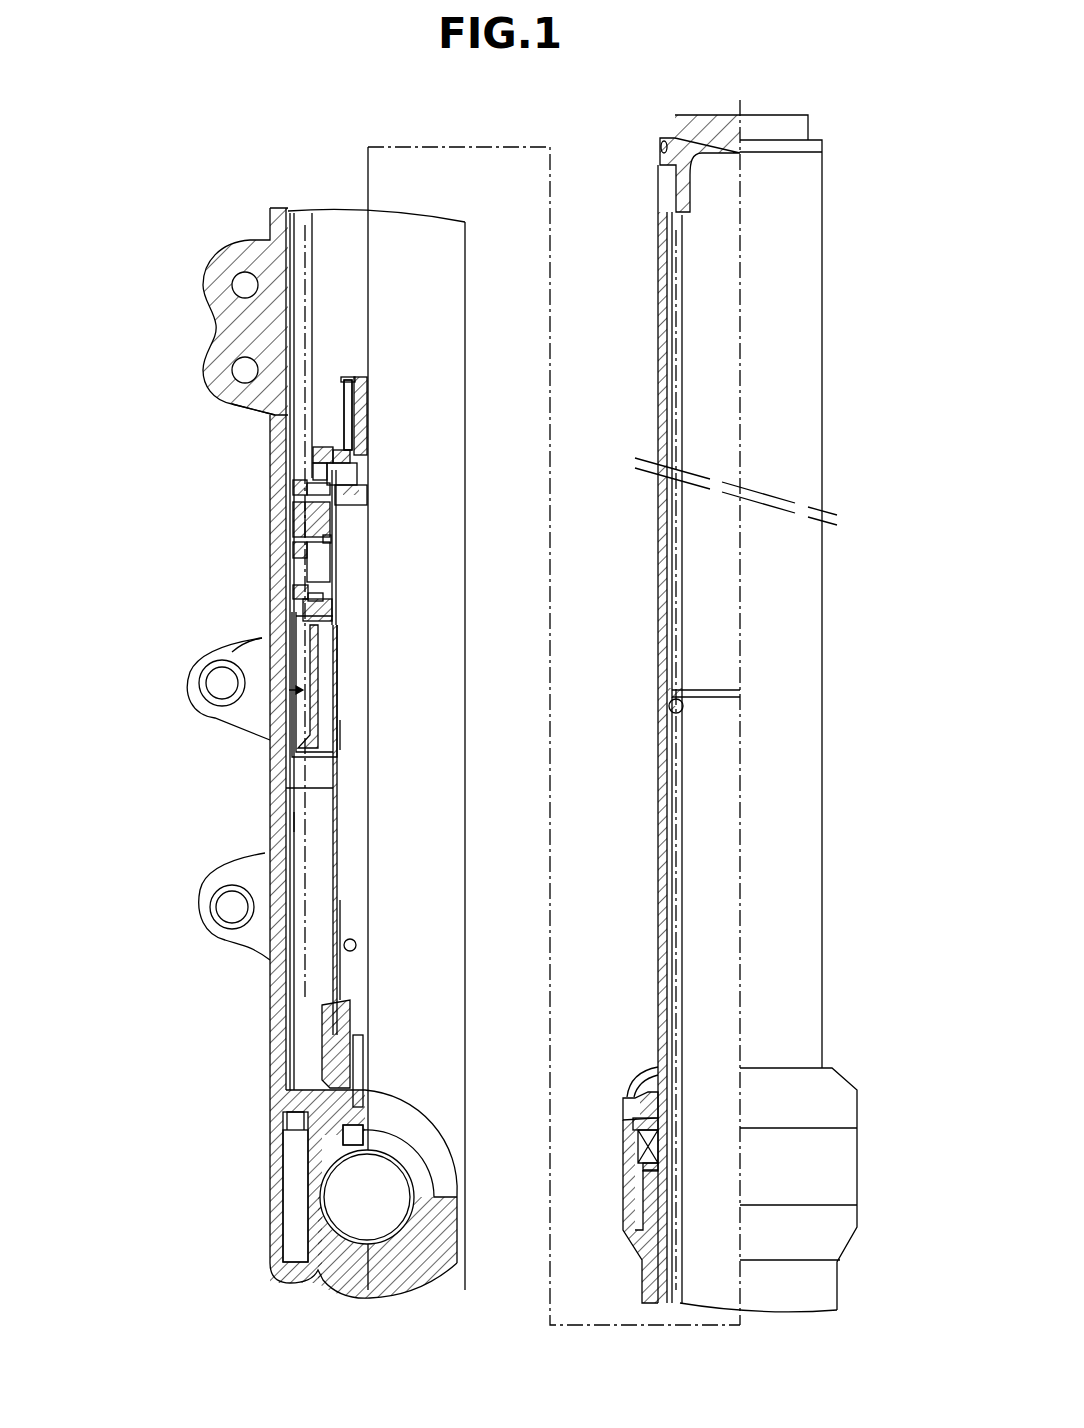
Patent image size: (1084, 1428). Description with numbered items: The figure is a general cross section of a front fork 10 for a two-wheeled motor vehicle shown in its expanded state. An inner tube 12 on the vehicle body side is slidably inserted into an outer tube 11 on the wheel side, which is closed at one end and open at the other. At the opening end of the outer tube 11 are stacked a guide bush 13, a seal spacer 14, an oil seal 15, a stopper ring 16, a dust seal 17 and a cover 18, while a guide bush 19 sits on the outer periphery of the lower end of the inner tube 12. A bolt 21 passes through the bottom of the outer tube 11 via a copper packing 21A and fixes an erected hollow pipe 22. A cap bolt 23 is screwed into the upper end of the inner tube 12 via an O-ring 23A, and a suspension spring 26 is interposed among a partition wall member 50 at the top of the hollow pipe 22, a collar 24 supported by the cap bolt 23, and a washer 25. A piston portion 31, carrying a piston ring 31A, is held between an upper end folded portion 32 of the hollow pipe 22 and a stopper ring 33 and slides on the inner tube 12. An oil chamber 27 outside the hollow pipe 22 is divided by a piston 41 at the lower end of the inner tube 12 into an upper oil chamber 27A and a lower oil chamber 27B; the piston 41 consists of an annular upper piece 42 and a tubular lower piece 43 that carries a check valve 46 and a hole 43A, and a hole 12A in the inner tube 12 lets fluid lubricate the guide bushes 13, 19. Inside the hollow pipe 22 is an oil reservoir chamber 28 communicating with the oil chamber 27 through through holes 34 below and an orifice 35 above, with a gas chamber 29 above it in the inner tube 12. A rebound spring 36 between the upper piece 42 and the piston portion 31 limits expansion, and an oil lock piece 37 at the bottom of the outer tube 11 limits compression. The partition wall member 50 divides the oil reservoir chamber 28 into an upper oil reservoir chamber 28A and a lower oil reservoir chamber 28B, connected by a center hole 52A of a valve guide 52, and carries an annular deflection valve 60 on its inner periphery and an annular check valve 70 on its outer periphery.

The front fork 10 is at (302, 170).
The outer tube 11 is at (265, 318).
The inner tube 12 is at (660, 495).
The hole 12A is at (290, 650).
The guide bush 13 is at (662, 1190).
The seal spacer 14 is at (648, 1166).
The oil seal 15 is at (648, 1147).
The stopper ring 16 is at (648, 1125).
The dust seal 17 is at (655, 1100).
The cover 18 is at (640, 1078).
The guide bush 19 is at (285, 723).
The bolt 21 is at (340, 1133).
The copper packing 21A is at (340, 1112).
The hollow pipe 22 is at (330, 790).
The cap bolt 23 is at (678, 125).
The O-ring 23A is at (660, 147).
The collar 24 is at (664, 340).
The washer 25 is at (672, 695).
The suspension spring 26 is at (312, 457).
The oil chamber 27 is at (303, 808).
The upper oil chamber 27A is at (322, 567).
The lower oil chamber 27B is at (305, 822).
The oil reservoir chamber 28 is at (352, 713).
The upper oil reservoir chamber 28A is at (331, 228).
The lower oil reservoir chamber 28B is at (350, 736).
The gas chamber 29 is at (685, 285).
The piston portion 31 is at (298, 530).
The piston ring 31A is at (295, 515).
The upper end folded portion 32 is at (360, 500).
The stopper ring 33 is at (331, 540).
The through holes 34 is at (336, 909).
The orifice 35 is at (338, 690).
The rebound spring 36 is at (305, 547).
The oil lock piece 37 is at (325, 1048).
The piston 41 is at (290, 675).
The upper piece 42 is at (297, 595).
The lower piece 43 is at (295, 745).
The hole 43A is at (318, 660).
The check valve 46 is at (333, 612).
The partition wall member 50 is at (300, 487).
The valve guide 52 is at (349, 378).
The center hole 52A is at (370, 400).
The deflection valve 60 is at (334, 445).
The check valve 70 is at (270, 410).